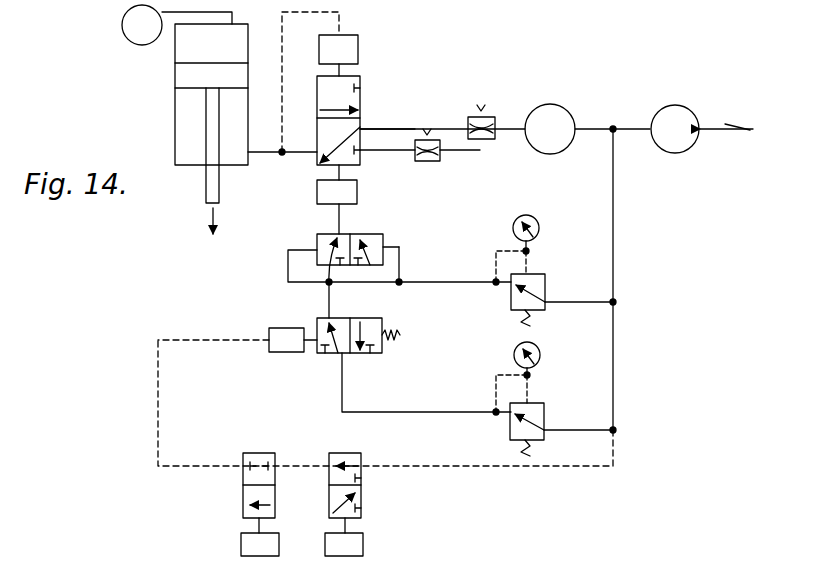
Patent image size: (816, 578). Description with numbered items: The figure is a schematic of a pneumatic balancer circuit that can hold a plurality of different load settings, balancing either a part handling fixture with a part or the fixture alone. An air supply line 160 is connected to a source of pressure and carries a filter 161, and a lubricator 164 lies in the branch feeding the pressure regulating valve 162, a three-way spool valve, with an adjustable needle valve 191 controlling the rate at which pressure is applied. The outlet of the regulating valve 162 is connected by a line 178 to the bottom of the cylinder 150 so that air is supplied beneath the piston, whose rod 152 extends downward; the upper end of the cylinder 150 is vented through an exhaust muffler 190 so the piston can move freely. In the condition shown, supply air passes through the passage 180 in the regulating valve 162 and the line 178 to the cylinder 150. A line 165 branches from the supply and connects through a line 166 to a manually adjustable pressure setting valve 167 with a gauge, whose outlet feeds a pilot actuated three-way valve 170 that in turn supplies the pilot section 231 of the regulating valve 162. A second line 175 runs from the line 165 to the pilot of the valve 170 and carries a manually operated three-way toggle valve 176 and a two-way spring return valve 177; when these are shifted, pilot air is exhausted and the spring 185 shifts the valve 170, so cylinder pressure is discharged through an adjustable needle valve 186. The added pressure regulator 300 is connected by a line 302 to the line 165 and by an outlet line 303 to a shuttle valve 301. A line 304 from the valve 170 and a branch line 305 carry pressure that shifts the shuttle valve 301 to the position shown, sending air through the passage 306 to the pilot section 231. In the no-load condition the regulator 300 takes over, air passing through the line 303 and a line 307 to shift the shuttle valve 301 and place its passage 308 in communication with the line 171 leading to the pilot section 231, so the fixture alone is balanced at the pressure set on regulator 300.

The cylinder 150 is at (175, 102).
The piston rod 152 is at (206, 193).
The air supply line 160 is at (748, 128).
The filter 161 is at (673, 108).
The pressure regulating valve 162 is at (360, 84).
The lubricator 164 is at (552, 108).
The line 165 is at (613, 246).
The line 166 is at (565, 430).
The pressure setting valve 167 is at (540, 400).
The pilot actuated three-way valve 170 is at (372, 318).
The line 171 is at (340, 228).
The second line 175 is at (613, 448).
The toggle valve 176 is at (361, 503).
The spring return valve 177 is at (243, 494).
The line 178 is at (268, 157).
The passage 180 is at (316, 163).
The spring 185 is at (400, 335).
The adjustable needle valve 186 is at (430, 162).
The exhaust muffler 190 is at (122, 24).
The adjustable needle valve 191 is at (490, 111).
The pilot section 231 is at (358, 188).
The pressure regulator 300 is at (542, 279).
The shuttle valve 301 is at (373, 254).
The line 302 is at (560, 304).
The outlet line 303 is at (453, 282).
The line 304 is at (329, 298).
The branch line 305 is at (288, 265).
The valve passage 306 is at (326, 248).
The line 307 is at (399, 256).
The valve passage 308 is at (382, 241).